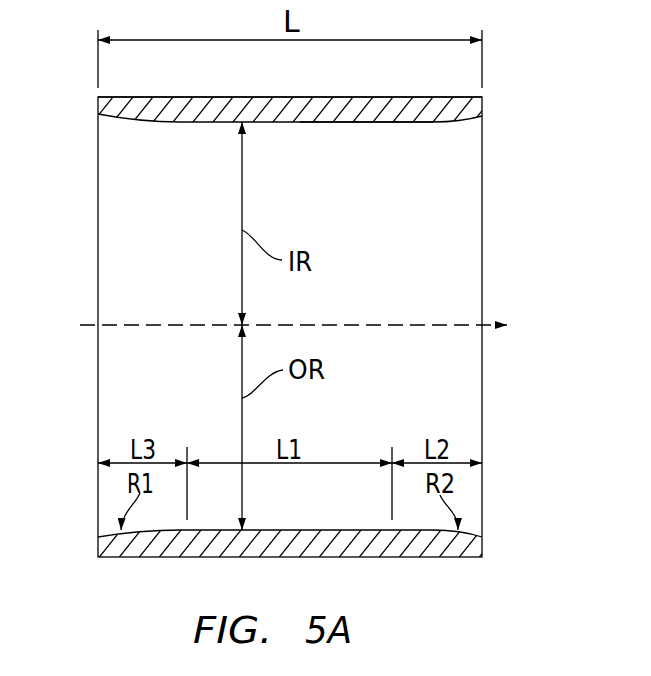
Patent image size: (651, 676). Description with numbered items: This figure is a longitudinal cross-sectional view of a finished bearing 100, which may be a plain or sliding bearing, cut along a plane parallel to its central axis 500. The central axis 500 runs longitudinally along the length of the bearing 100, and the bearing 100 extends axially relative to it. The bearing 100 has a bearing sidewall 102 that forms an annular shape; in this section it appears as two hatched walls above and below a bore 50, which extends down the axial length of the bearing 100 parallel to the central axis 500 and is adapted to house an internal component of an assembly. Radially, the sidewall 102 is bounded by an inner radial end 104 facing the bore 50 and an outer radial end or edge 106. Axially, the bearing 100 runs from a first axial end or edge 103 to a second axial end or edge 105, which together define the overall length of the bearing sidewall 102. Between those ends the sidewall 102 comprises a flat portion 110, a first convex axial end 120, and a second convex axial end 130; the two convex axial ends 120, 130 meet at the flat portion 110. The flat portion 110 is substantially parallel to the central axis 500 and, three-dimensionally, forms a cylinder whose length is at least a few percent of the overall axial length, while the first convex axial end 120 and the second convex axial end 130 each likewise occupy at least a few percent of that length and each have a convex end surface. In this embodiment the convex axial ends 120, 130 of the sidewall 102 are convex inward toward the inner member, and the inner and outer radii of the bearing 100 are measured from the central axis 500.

The bearing 100 is at (307, 322).
The bearing sidewall 102 is at (360, 97).
The first axial end or edge 103 is at (482, 546).
The inner radial end 104 is at (360, 122).
The second axial end or edge 105 is at (98, 538).
The outer radial end or edge 106 is at (260, 97).
The flat portion 110 is at (283, 122).
The first convex axial end 120 is at (452, 122).
The second convex axial end 130 is at (128, 117).
The bore 50 is at (290, 326).
The central axis 500 is at (316, 326).